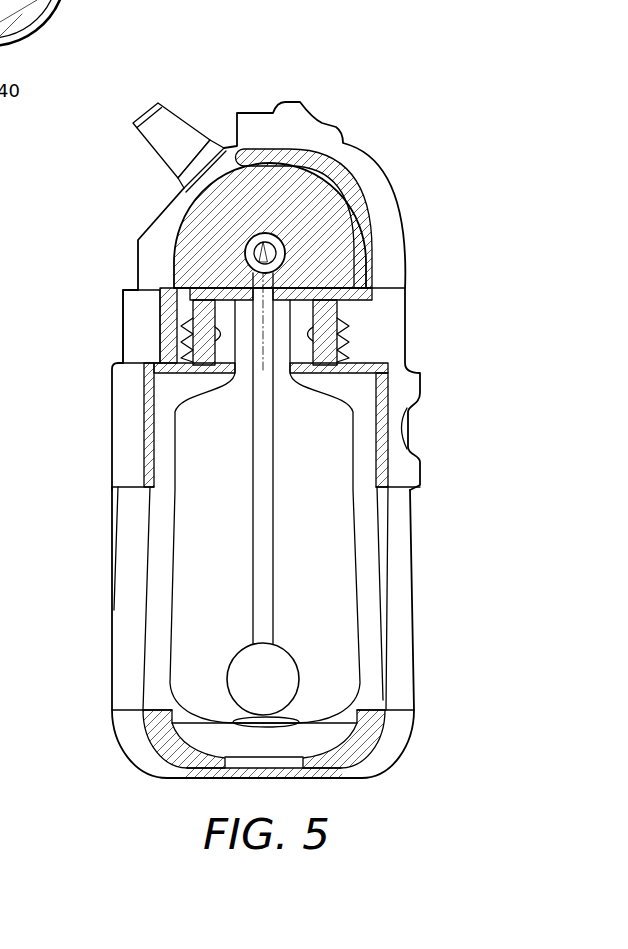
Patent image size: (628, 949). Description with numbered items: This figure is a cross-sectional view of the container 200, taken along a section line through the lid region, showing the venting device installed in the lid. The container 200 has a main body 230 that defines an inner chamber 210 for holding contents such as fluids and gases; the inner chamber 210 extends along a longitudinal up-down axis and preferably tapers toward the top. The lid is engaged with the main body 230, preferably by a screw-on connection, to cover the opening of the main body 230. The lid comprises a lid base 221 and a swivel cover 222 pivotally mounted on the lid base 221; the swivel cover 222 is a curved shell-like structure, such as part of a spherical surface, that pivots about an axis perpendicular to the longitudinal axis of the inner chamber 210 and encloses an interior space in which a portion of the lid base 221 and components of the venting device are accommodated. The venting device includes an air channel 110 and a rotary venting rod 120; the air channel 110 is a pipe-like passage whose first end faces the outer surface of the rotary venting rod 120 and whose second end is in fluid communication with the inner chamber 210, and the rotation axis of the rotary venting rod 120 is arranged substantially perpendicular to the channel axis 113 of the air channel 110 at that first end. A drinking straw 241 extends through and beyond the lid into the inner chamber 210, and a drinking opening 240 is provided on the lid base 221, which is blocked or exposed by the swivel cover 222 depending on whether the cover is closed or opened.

The container 200 is at (318, 63).
The swivel cover 222 is at (358, 152).
The main body 230 is at (125, 592).
The drinking straw 241 is at (147, 107).
The lid base 221 is at (134, 341).
The channel axis 113 is at (263, 322).
The inner chamber 210 is at (233, 620).
The air channel 110 is at (258, 279).
The rotary venting rod 120 is at (247, 243).
The drinking opening 240 is at (263, 563).